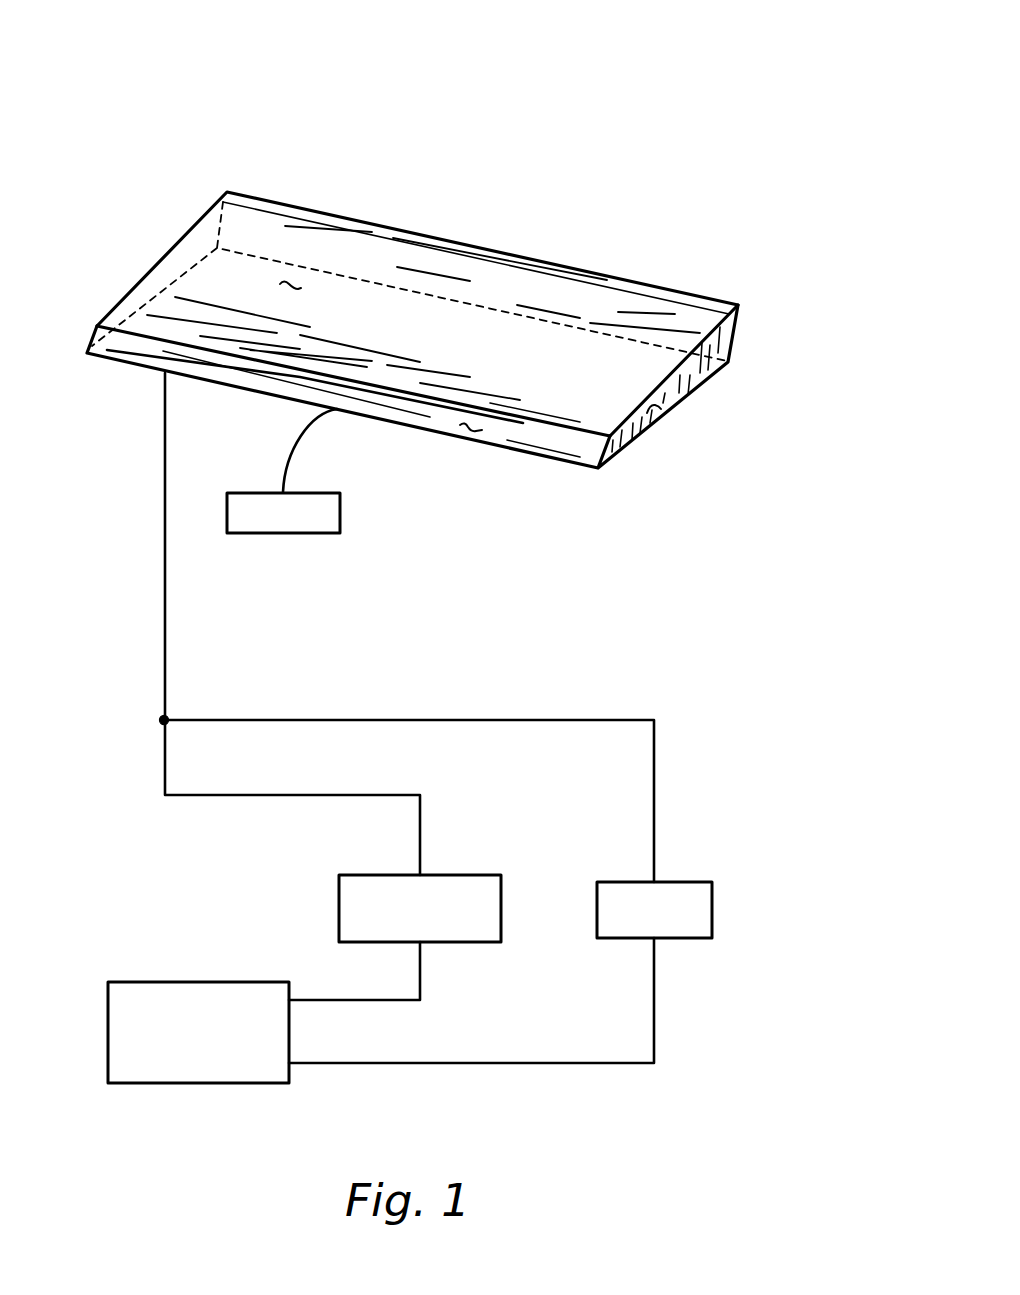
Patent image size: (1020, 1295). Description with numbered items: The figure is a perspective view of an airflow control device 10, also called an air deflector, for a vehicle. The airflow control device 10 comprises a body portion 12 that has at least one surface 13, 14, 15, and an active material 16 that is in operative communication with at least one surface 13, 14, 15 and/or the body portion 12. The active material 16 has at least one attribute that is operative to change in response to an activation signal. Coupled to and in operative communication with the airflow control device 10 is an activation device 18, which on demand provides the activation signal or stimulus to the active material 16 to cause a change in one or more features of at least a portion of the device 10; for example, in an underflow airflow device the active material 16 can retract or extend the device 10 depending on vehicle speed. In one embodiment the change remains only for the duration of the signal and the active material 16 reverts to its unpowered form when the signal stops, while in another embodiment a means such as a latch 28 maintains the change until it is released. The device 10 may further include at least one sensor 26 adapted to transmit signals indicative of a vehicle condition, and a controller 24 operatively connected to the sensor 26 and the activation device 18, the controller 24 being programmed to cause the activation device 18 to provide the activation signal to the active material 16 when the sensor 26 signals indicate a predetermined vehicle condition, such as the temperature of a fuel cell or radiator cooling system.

The airflow control device 10 is at (552, 121).
The body portion 12 is at (735, 344).
The surface 13 is at (294, 285).
The surface 14 is at (656, 410).
The surface 15 is at (468, 436).
The active material 16 is at (525, 288).
The activation device 18 is at (457, 874).
The controller 24 is at (177, 980).
The sensor 26 is at (712, 896).
The latch 28 is at (277, 533).